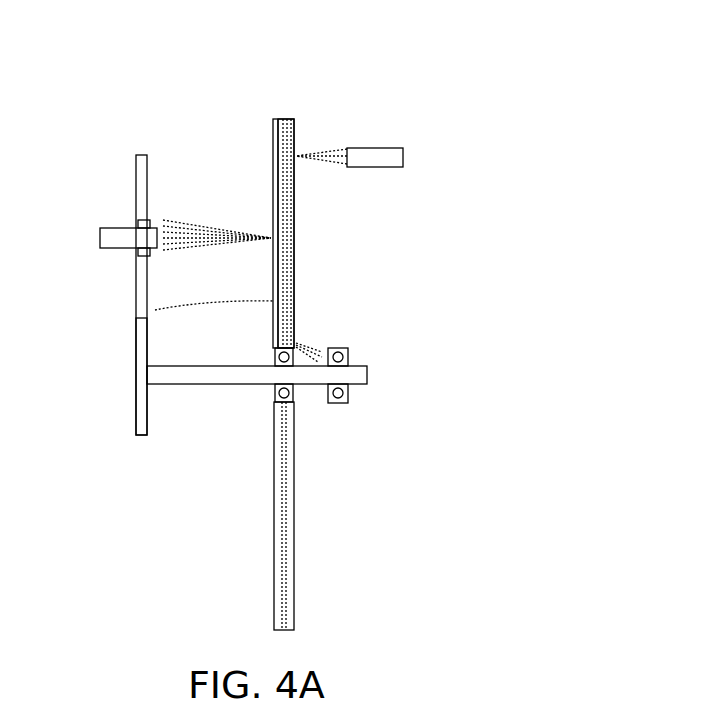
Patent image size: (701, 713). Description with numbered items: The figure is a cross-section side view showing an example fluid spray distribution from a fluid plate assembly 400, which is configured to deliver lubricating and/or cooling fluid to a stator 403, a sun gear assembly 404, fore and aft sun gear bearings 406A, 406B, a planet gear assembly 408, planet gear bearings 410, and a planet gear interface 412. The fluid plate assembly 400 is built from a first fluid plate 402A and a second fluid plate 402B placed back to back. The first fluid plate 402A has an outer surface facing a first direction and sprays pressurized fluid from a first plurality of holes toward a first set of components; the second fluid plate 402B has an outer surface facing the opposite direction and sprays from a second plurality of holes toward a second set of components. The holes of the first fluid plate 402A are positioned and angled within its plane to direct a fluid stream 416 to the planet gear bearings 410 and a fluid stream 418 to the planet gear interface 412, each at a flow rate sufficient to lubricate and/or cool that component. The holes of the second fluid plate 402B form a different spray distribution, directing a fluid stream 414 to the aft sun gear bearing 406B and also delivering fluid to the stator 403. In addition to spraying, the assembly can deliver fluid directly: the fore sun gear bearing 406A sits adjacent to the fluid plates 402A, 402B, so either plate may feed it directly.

The fluid plate assembly 400 is at (301, 104).
The first fluid plate 402A is at (273, 121).
The second fluid plate 402B is at (293, 135).
The stator 403 is at (397, 148).
The sun gear assembly 404 is at (142, 347).
The fore sun gear bearing 406A is at (277, 363).
The aft sun gear bearing 406B is at (343, 348).
The planet gear assembly 408 is at (140, 163).
The planet gear bearings 410 is at (140, 223).
The planet gear interface 412 is at (131, 313).
The fluid stream 414 is at (304, 334).
The fluid stream 416 is at (209, 211).
The fluid stream 418 is at (187, 296).